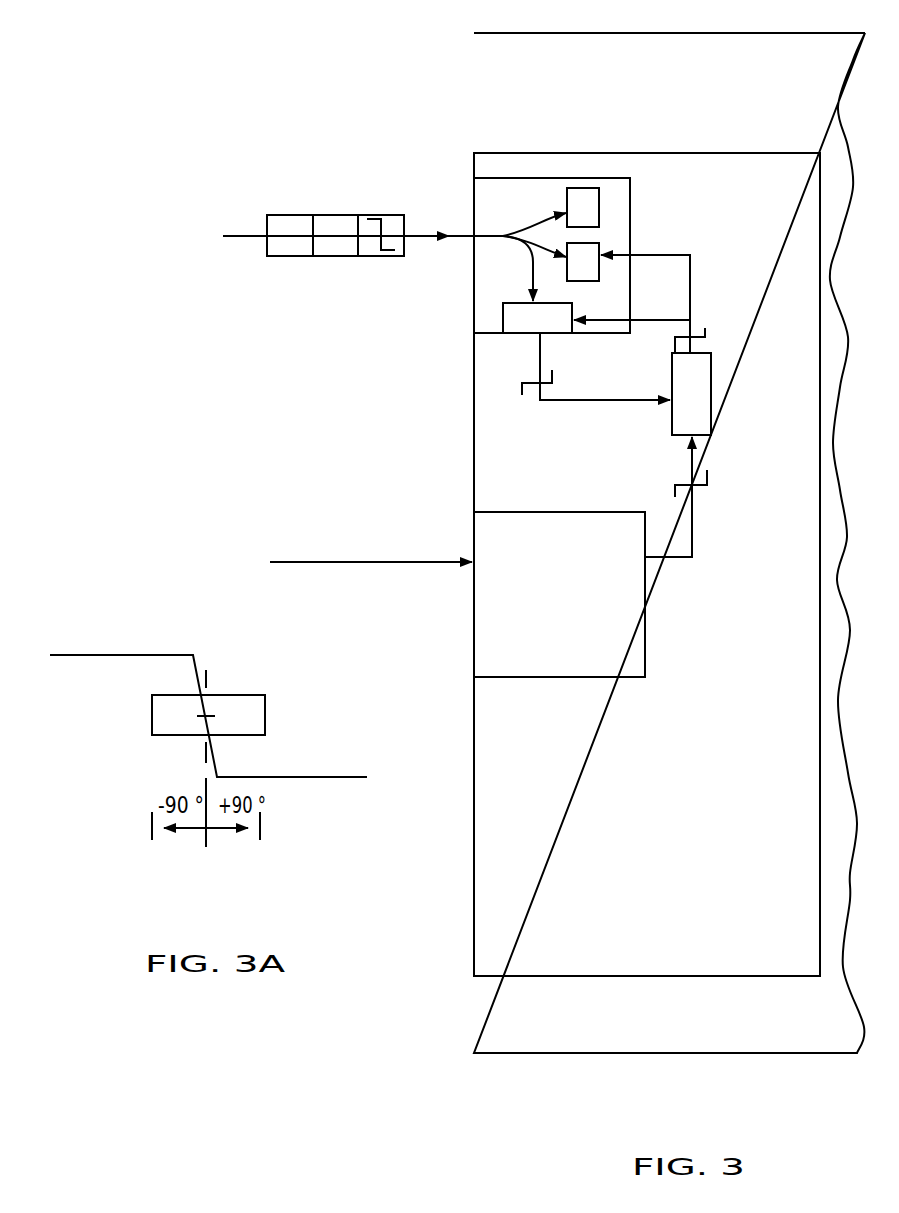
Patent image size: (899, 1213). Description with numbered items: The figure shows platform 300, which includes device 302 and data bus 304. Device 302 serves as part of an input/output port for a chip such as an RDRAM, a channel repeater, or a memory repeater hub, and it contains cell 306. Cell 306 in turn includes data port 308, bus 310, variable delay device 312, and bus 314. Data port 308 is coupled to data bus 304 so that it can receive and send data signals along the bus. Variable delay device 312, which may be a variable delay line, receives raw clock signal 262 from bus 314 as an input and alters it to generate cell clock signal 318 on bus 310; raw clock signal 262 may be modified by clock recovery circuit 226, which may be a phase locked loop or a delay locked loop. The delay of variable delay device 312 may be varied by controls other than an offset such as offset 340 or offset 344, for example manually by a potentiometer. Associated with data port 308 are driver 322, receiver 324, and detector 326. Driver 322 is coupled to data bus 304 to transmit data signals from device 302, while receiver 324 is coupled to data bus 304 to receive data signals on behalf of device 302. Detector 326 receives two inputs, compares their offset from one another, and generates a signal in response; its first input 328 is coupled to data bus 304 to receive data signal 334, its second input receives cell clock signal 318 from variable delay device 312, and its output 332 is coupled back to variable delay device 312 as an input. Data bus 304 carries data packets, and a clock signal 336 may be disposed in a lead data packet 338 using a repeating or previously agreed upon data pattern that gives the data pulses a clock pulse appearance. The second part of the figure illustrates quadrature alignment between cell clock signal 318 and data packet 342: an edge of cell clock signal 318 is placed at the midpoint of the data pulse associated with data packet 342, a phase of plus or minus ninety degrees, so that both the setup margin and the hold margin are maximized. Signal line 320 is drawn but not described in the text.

In FIG. 3, the platform 300 is at (206, 95).
In FIG. 3, the device 302 is at (795, 68).
In FIG. 3, the data bus 304 is at (253, 236).
In FIG. 3, the cell 306 is at (783, 191).
In FIG. 3, the data port 308 is at (523, 210).
In FIG. 3, the bus 310 is at (692, 322).
In FIG. 3, the variable delay device 312 is at (711, 413).
In FIG. 3, the bus 314 is at (692, 532).
In FIG. 3, the cell clock signal 318 is at (705, 328).
In FIG. 3A, the cell clock signal 318 is at (90, 653).
In FIG. 3, the reference control line 320 is at (604, 320).
In FIG. 3, the driver 322 is at (592, 188).
In FIG. 3, the receiver 324 is at (598, 243).
In FIG. 3, the detector 326 is at (503, 320).
In FIG. 3, the first input 328 is at (533, 276).
In FIG. 3, the output 332 is at (540, 338).
In FIG. 3, the data signal 334 is at (417, 285).
In FIG. 3, the clock signal 336 is at (403, 227).
In FIG. 3, the data packet 338 is at (385, 215).
In FIG. 3, the offset 340 is at (552, 370).
In FIG. 3, the data packet 342 is at (340, 215).
In FIG. 3A, the data packet 342 is at (265, 712).
In FIG. 3, the offset 344 is at (282, 215).
In FIG. 3, the raw clock signal 262 is at (707, 470).
In FIG. 3, the clock recovery circuit 226 is at (527, 548).